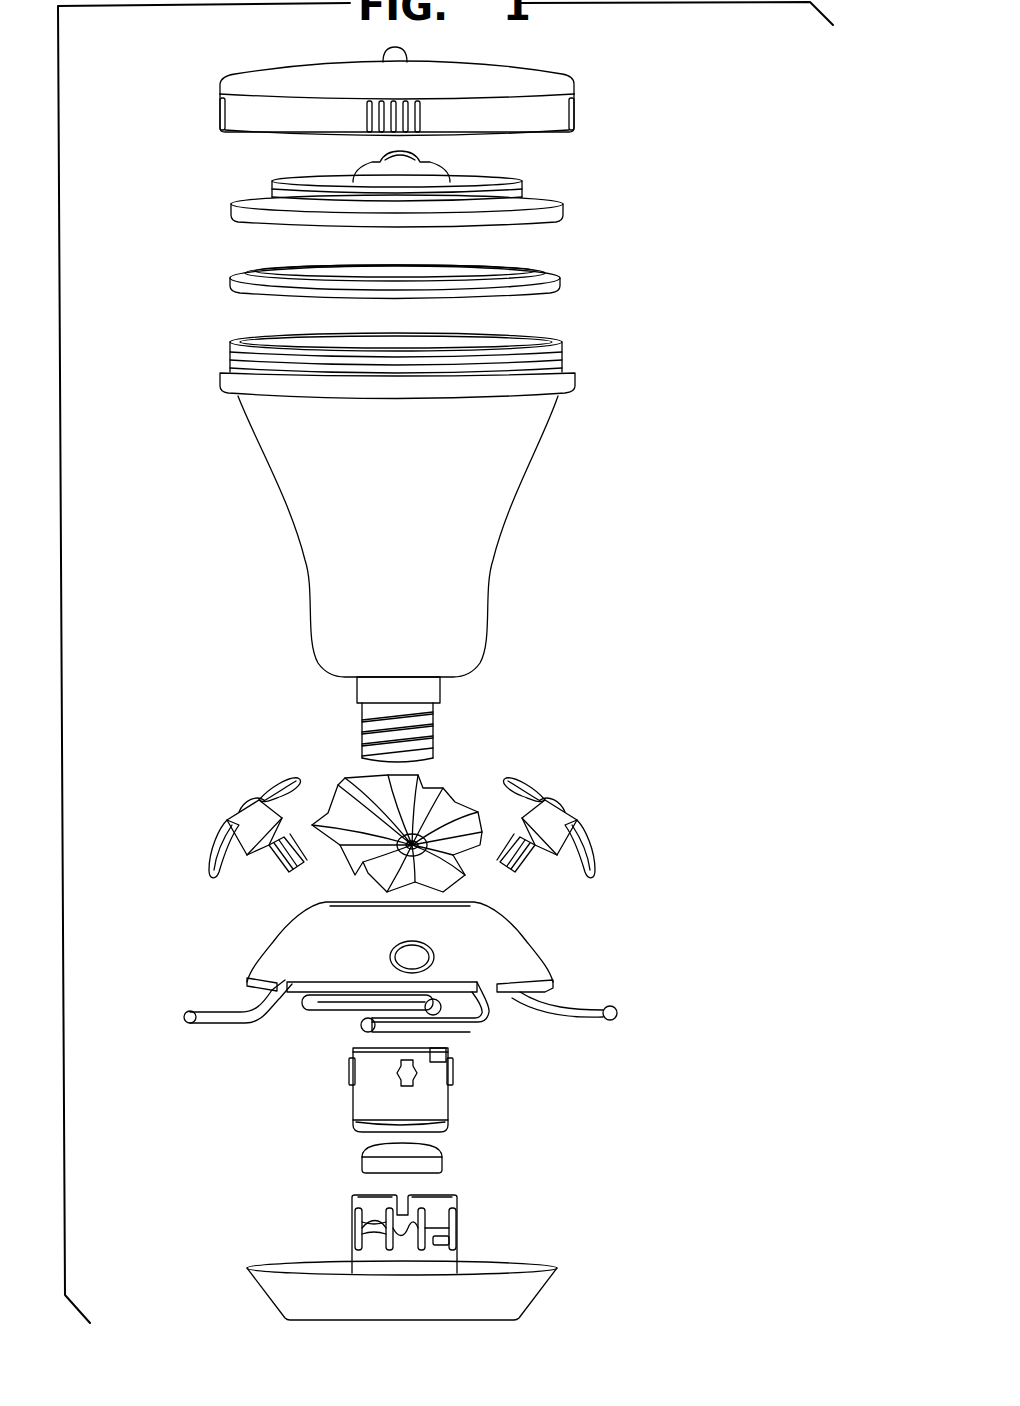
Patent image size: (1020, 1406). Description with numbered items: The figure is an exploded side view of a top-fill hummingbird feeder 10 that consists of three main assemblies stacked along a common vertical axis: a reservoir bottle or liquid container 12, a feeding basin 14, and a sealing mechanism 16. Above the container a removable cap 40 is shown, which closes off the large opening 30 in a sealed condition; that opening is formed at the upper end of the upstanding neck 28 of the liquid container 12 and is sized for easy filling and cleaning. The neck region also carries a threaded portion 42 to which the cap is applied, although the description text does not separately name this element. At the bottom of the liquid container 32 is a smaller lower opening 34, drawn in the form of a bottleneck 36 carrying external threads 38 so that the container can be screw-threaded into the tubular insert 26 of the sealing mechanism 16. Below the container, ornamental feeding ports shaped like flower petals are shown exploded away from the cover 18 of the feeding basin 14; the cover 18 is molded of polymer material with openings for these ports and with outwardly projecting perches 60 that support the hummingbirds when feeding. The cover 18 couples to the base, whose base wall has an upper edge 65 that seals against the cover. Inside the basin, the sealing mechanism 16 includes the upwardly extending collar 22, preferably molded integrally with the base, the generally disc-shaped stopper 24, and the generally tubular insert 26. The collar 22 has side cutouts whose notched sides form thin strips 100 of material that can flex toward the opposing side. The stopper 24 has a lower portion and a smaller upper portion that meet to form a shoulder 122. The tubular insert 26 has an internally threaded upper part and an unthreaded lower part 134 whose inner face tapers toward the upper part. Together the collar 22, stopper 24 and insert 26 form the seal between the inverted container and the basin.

The top-fill hummingbird feeder 10 is at (744, 168).
The liquid container 12 is at (278, 493).
The feeding basin 14 is at (406, 1111).
The sealing mechanism 16 is at (401, 1160).
The cover 18 is at (488, 940).
The upwardly extending collar 22 is at (399, 1234).
The stopper 24 is at (453, 1167).
The tubular insert 26 is at (437, 1103).
The neck 28 is at (575, 373).
The large opening 30 is at (443, 333).
The bottom of the liquid container 32 is at (410, 720).
The lower opening 34 is at (373, 760).
The bottleneck 36 is at (353, 705).
The external threads 38 is at (437, 728).
The removable cap 40 is at (517, 105).
The threaded neck 42 is at (230, 352).
The perches 60 is at (242, 1012).
The upper edge 65 is at (272, 1287).
The strip 100 is at (353, 1227).
The shoulder 122 is at (425, 1148).
The unthreaded lower part 134 is at (422, 1121).